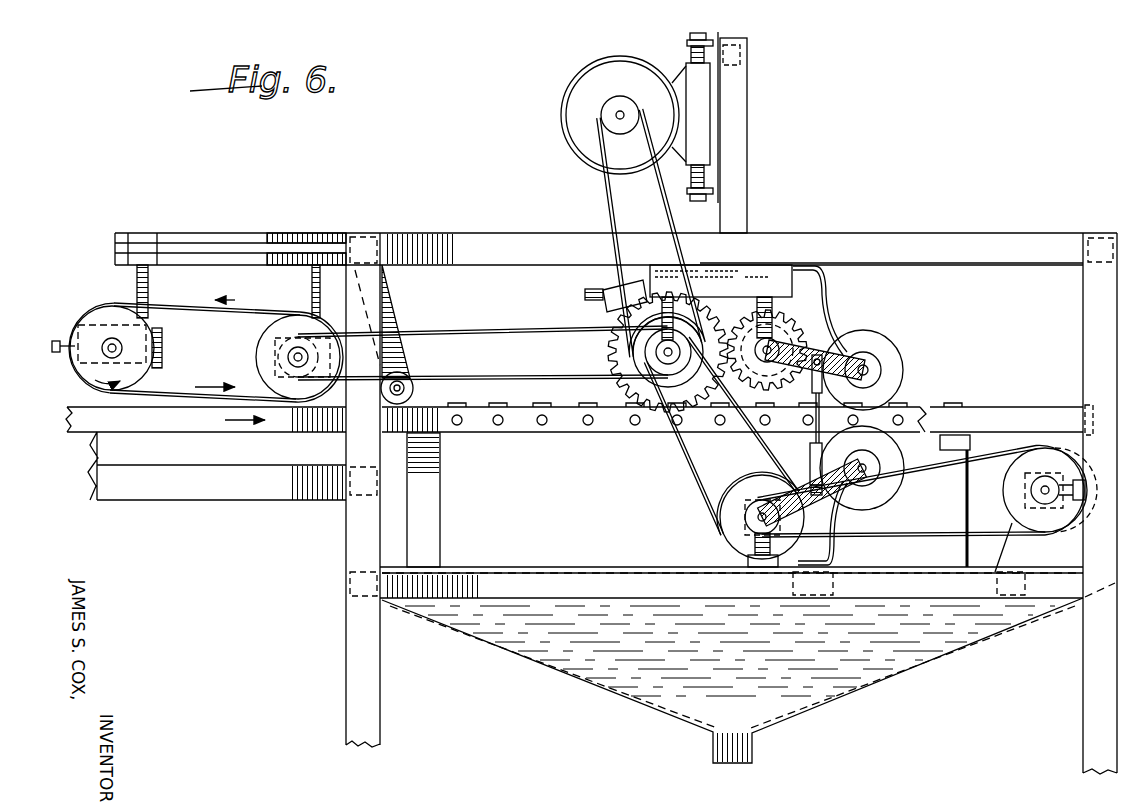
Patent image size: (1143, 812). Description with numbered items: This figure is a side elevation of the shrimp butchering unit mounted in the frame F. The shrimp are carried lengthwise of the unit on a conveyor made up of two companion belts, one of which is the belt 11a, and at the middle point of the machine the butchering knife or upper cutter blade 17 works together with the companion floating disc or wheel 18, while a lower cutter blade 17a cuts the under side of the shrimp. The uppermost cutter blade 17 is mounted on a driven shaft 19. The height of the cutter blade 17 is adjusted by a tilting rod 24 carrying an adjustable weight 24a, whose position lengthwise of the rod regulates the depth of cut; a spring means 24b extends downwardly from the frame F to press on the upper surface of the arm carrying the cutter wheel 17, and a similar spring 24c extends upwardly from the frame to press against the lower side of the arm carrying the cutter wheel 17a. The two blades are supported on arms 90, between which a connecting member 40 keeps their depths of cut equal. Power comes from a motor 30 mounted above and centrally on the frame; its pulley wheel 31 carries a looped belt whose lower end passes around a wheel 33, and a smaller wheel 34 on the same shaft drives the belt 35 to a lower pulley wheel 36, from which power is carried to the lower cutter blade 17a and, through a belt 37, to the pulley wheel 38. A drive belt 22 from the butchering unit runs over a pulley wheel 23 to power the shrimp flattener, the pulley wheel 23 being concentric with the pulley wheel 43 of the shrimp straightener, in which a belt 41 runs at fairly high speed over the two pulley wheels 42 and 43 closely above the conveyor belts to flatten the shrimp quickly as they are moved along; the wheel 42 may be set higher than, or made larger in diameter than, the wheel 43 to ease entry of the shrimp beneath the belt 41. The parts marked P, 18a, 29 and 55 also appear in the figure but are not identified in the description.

The frame F is at (920, 245).
The hopper P is at (830, 700).
The belt 11a is at (277, 427).
The butchering knife cutter blade 17 is at (906, 368).
The lower cutter blade 17a is at (902, 487).
The companion floating disc 18 is at (888, 345).
The link arm 18a is at (877, 500).
The driven shaft 19 is at (866, 356).
The belt 22 is at (440, 332).
The pulley wheel 23 is at (265, 357).
The tilting rod 24 is at (590, 290).
The adjustable weight 24a is at (605, 300).
The spring means 24b is at (822, 283).
The spring 24c is at (832, 553).
The gear and pulley 29 is at (640, 355).
The motor 30 is at (561, 102).
The pulley wheel 31 is at (606, 121).
The wheel 33 is at (652, 413).
The smaller wheel 34 is at (640, 377).
The belt 35 is at (606, 198).
The lower pulley wheel 36 is at (733, 538).
The belt 37 is at (912, 534).
The pulley wheel 38 is at (1053, 532).
The connecting member 40 is at (810, 450).
The belt 41 is at (185, 303).
The pulley wheel 42 is at (78, 320).
The pulley wheel 43 is at (283, 320).
The belt strand 55 is at (684, 456).
The arms 90 is at (818, 355).